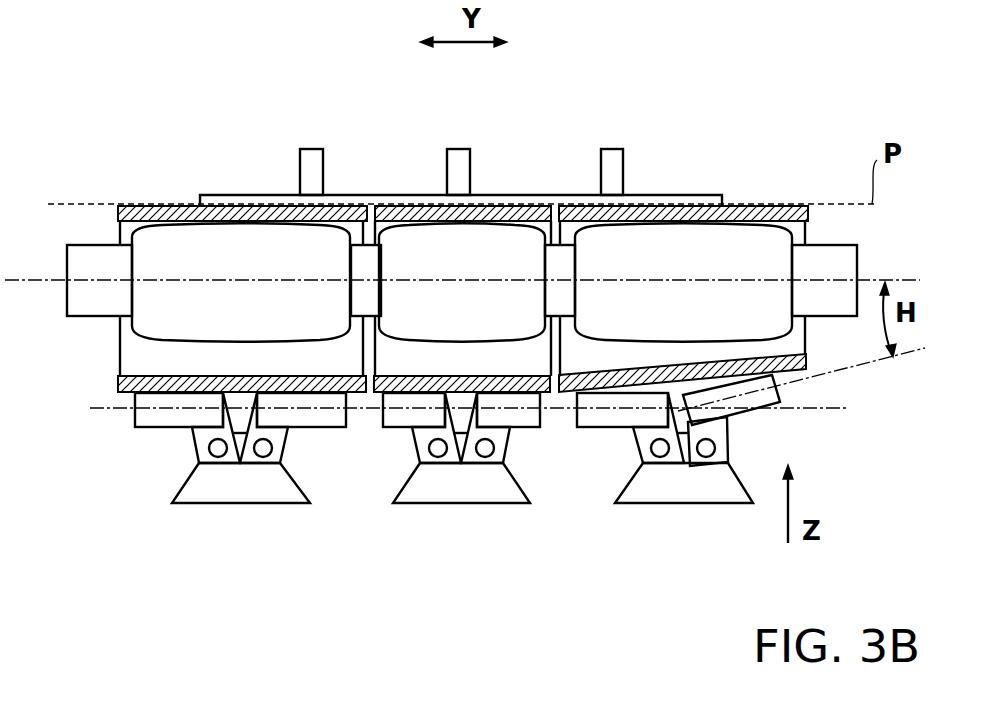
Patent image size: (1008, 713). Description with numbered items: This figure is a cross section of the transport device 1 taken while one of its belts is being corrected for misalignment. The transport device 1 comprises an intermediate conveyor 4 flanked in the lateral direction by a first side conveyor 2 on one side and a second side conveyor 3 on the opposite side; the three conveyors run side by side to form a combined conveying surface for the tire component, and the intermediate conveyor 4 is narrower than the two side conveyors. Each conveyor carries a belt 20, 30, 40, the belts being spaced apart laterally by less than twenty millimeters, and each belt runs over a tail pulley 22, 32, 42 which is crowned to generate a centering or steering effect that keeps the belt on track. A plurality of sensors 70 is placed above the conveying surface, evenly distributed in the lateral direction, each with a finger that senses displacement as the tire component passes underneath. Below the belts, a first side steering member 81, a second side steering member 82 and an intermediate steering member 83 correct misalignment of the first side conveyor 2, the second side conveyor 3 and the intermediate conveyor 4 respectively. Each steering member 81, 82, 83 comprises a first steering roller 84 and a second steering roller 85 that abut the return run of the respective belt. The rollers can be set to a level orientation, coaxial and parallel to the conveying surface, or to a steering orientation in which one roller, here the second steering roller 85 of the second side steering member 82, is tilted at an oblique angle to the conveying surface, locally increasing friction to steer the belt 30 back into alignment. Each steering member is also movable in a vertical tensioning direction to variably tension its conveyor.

The transport device 1 is at (88, 85).
The first side conveyor 2 is at (118, 350).
The belt 20 is at (117, 386).
The tail pulley 22 is at (217, 330).
The second side conveyor 3 is at (793, 338).
The belt 30 is at (790, 375).
The tail pulley 32 is at (632, 333).
The intermediate conveyor 4 is at (382, 370).
The belt 40 is at (548, 395).
The tail pulley 42 is at (490, 325).
The sensor 70 is at (445, 157).
The first side steering member 81 is at (283, 490).
The second side steering member 82 is at (732, 490).
The intermediate steering member 83 is at (510, 495).
The first steering roller 84 is at (608, 413).
The second steering roller 85 is at (752, 402).